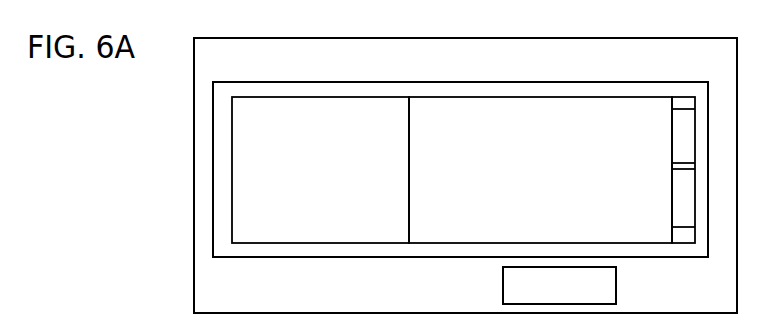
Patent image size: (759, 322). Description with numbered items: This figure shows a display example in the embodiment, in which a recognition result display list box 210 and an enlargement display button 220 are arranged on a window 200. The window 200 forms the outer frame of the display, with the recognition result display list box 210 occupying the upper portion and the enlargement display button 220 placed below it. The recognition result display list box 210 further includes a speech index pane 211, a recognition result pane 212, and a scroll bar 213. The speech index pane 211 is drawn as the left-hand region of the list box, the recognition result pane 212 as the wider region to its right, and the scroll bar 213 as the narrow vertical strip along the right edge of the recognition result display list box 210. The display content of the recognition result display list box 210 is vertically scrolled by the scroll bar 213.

The window 200 is at (215, 39).
The recognition result display list box 210 is at (230, 82).
The speech index pane 211 is at (233, 150).
The recognition result pane 212 is at (388, 162).
The scroll bar 213 is at (693, 86).
The enlargement display button 220 is at (617, 280).